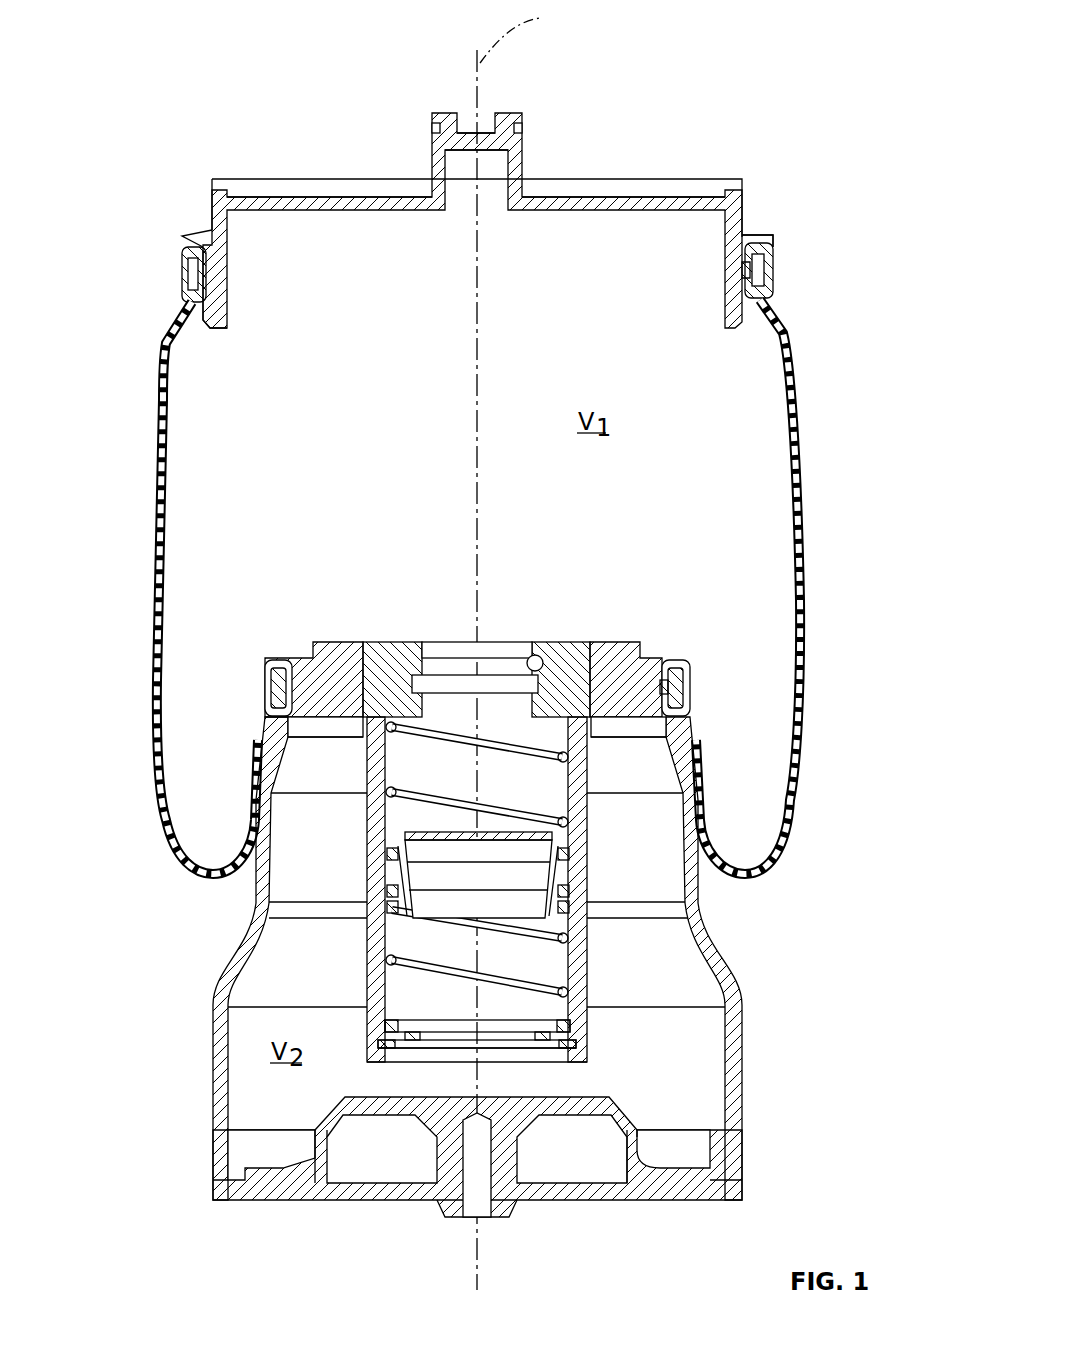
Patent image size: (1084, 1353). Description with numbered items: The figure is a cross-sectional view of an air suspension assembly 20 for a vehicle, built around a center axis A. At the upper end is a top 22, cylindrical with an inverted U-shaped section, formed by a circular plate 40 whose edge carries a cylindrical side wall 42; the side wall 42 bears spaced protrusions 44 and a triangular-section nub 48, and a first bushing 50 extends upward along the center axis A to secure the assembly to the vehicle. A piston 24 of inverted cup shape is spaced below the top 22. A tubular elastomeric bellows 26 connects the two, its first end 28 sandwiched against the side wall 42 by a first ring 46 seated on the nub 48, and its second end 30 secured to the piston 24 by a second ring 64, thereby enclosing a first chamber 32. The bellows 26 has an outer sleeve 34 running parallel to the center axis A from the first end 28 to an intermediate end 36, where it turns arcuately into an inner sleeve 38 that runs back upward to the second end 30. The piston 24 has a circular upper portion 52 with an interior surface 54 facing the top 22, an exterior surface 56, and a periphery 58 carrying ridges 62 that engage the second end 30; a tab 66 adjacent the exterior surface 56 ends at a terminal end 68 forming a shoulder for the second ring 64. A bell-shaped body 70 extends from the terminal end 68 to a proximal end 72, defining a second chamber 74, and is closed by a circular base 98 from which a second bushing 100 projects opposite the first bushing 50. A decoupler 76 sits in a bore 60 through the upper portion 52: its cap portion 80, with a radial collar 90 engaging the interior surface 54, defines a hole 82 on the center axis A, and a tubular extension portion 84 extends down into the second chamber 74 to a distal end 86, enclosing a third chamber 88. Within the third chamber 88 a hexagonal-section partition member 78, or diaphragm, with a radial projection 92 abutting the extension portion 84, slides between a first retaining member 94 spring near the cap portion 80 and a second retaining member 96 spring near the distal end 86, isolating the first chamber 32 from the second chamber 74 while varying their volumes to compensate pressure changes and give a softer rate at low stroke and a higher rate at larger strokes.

The air suspension assembly 20 is at (143, 152).
The center axis A is at (522, 34).
The top 22 is at (498, 200).
The piston 24 is at (523, 1003).
The bellows 26 is at (527, 587).
The first end 28 is at (774, 262).
The second end 30 is at (684, 690).
The first chamber 32 is at (800, 440).
The outer sleeve 34 is at (806, 505).
The intermediate end 36 is at (750, 862).
The inner sleeve 38 is at (700, 830).
The plate 40 is at (645, 197).
The side wall 42 is at (228, 272).
The protrusions 44 is at (184, 283).
The first ring 46 is at (772, 290).
The nub 48 is at (762, 235).
The first bushing 50 is at (503, 113).
The upper portion 52 is at (280, 662).
The interior surface 54 is at (476, 676).
The exterior surface 56 is at (337, 737).
The periphery 58 is at (650, 657).
The bore 60 is at (590, 678).
The ridges 62 is at (243, 646).
The second ring 64 is at (707, 688).
The tab 66 is at (627, 737).
The terminal end 68 is at (692, 718).
The body 70 is at (705, 945).
The proximal end 72 is at (730, 1175).
The second chamber 74 is at (730, 1072).
The decoupler 76 is at (512, 627).
The partition member 78 is at (552, 838).
The cap portion 80 is at (405, 642).
The hole 82 is at (535, 655).
The extension portion 84 is at (515, 909).
The distal end 86 is at (577, 1062).
The third chamber 88 is at (578, 1025).
The collar 90 is at (615, 642).
The projection 92 is at (388, 876).
The first retaining member 94 is at (385, 798).
The second retaining member 96 is at (385, 962).
The base 98 is at (523, 1193).
The second bushing 100 is at (437, 1203).